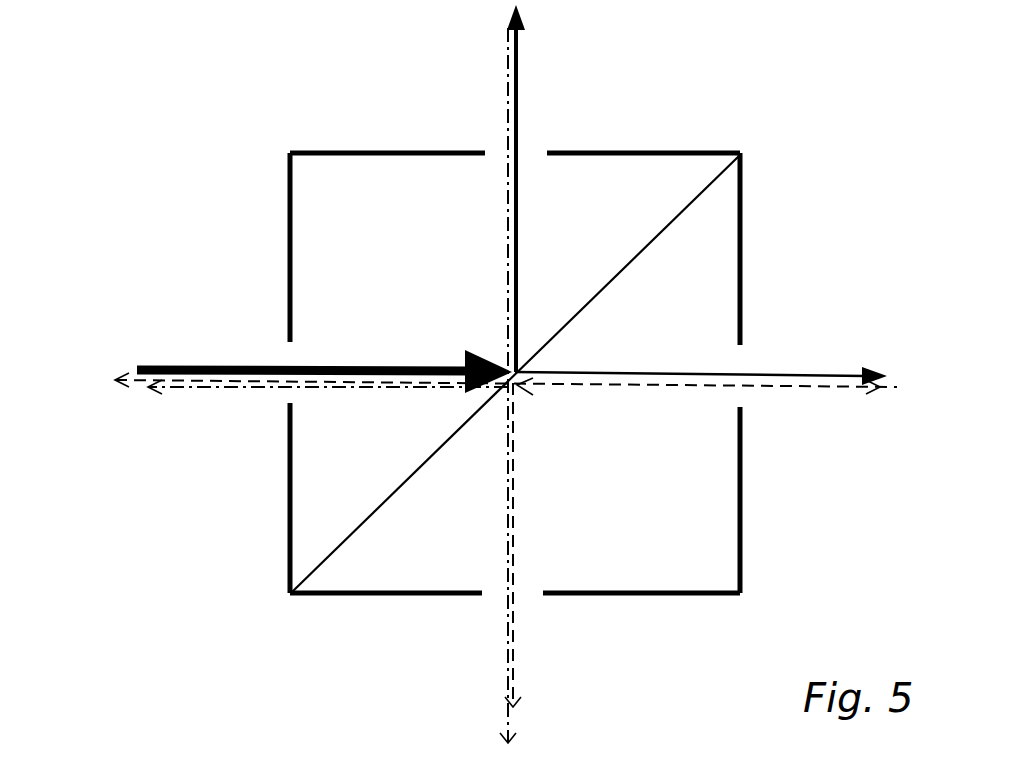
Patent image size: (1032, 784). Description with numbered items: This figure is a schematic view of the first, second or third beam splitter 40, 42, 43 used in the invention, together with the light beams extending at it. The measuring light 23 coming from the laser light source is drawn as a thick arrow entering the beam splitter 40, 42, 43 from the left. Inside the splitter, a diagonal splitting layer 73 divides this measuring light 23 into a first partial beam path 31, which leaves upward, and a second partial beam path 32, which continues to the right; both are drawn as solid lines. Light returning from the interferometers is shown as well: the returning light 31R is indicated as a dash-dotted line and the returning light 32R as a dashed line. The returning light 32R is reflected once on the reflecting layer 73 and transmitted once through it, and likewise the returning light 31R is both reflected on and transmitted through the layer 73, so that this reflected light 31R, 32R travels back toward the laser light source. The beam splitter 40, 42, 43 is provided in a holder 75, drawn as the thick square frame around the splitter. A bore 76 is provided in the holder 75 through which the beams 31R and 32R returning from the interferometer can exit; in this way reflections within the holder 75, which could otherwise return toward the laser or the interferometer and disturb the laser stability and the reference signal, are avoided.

The measuring light 23 is at (253, 363).
The first partial beam path 31 is at (517, 83).
The returning light of the first partial beam path 31R is at (508, 104).
The second partial beam path 32 is at (788, 375).
The returning light of the second partial beam path 32R is at (128, 372).
The first beam splitter 40 is at (573, 331).
The second beam splitter 42 is at (573, 331).
The third beam splitter 43 is at (676, 146).
The splitting layer 73 is at (568, 320).
The holder 75 is at (314, 607).
The bore 76 is at (534, 582).